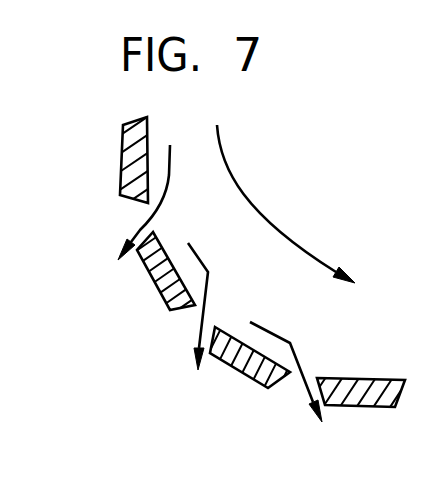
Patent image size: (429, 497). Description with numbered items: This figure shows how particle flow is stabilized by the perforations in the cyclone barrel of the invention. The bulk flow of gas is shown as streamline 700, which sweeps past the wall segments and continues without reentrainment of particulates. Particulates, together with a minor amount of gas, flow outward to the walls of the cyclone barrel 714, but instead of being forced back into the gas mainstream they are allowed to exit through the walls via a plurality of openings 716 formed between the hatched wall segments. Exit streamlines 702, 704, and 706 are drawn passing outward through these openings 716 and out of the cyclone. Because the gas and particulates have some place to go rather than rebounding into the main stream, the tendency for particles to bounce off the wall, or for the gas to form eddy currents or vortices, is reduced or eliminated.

The streamline 700 is at (245, 202).
The exit streamline 702 is at (172, 162).
The exit streamline 704 is at (232, 268).
The exit streamline 706 is at (283, 335).
The cyclone barrel 714 is at (120, 140).
The openings 716 is at (185, 323).